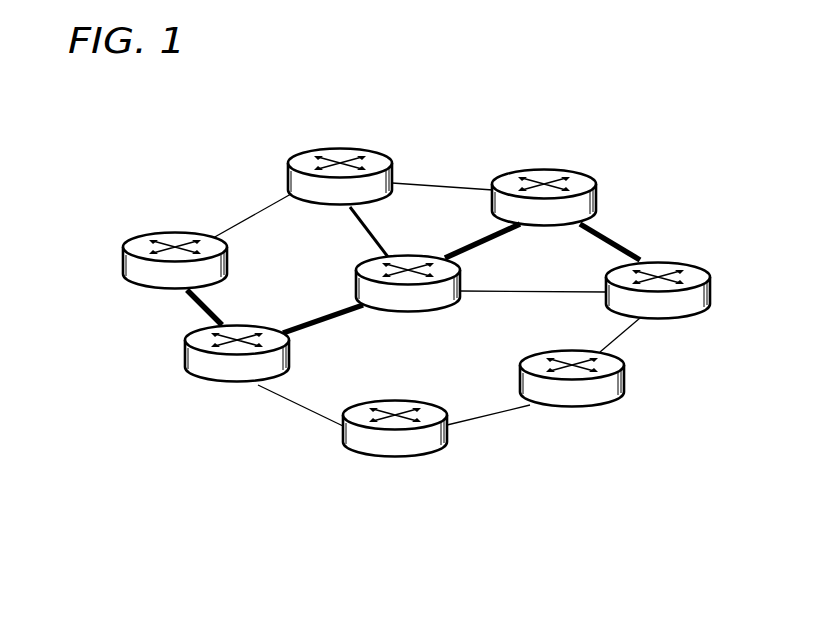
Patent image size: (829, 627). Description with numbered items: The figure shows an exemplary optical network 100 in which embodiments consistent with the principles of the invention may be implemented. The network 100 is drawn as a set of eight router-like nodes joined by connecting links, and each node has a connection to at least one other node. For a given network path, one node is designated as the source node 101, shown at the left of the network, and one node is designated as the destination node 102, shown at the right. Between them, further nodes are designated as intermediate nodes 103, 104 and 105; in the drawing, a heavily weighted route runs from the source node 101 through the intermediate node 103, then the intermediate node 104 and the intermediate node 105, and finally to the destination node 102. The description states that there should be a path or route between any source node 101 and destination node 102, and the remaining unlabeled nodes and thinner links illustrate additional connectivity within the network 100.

The optical network 100 is at (238, 136).
The source node 101 is at (176, 233).
The destination node 102 is at (670, 262).
The intermediate node 103 is at (224, 385).
The intermediate node 104 is at (411, 311).
The intermediate node 105 is at (550, 169).